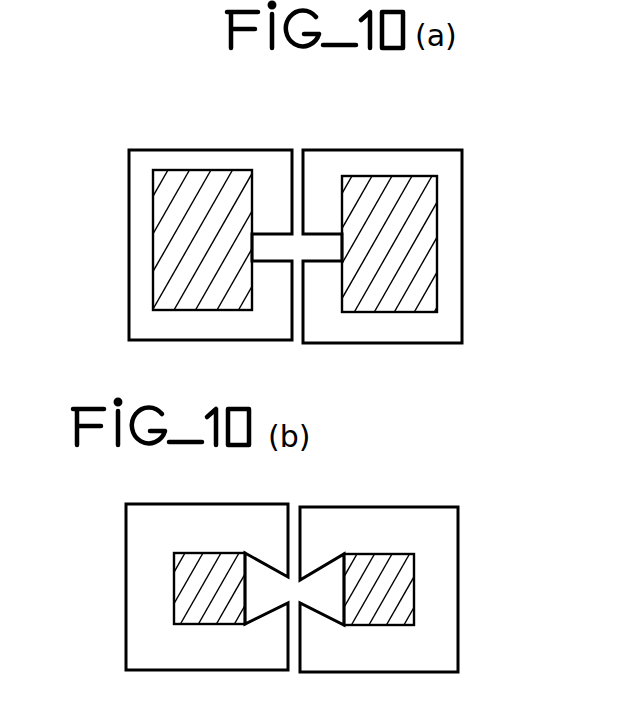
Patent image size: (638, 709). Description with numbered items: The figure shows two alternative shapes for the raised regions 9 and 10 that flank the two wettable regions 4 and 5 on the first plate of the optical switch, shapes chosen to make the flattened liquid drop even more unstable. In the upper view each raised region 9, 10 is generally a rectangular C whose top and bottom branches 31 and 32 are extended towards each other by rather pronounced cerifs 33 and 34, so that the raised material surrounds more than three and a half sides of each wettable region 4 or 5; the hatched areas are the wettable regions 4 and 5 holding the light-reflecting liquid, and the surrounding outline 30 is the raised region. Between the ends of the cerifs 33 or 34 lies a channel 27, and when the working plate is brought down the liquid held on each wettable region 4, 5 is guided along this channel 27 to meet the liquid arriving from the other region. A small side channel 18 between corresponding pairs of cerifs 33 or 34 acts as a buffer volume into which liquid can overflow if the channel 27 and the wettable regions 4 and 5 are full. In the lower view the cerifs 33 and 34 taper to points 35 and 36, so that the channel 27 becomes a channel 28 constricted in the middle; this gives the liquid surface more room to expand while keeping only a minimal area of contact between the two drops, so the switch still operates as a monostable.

In FIG. 10A, the wettable region 4 is at (165, 213).
In FIG. 10B, the wettable region 4 is at (200, 555).
In FIG. 10A, the wettable region 5 is at (420, 225).
In FIG. 10B, the wettable region 5 is at (398, 527).
In FIG. 10A, the raised region 9 is at (112, 232).
In FIG. 10B, the raised region 9 is at (112, 600).
In FIG. 10A, the raised region 10 is at (478, 220).
In FIG. 10B, the raised region 10 is at (478, 533).
In FIG. 10A, the side channel 18 is at (295, 310).
In FIG. 10A, the channel 27 is at (272, 247).
In FIG. 10B, the constricted channel 28 is at (259, 606).
In FIG. 10A, the core yoke 30 is at (129, 288).
In FIG. 10B, the core yoke 30 is at (128, 580).
In FIG. 10A, the top branch 31 is at (188, 122).
In FIG. 10B, the top branch 31 is at (203, 515).
In FIG. 10A, the bottom branch 32 is at (190, 327).
In FIG. 10B, the bottom branch 32 is at (198, 660).
In FIG. 10A, the cerif 33 is at (275, 177).
In FIG. 10B, the cerif 33 is at (277, 513).
In FIG. 10A, the cerif 34 is at (275, 312).
In FIG. 10B, the cerif 34 is at (308, 660).
In FIG. 10B, the point 35 is at (275, 565).
In FIG. 10B, the point 36 is at (278, 615).